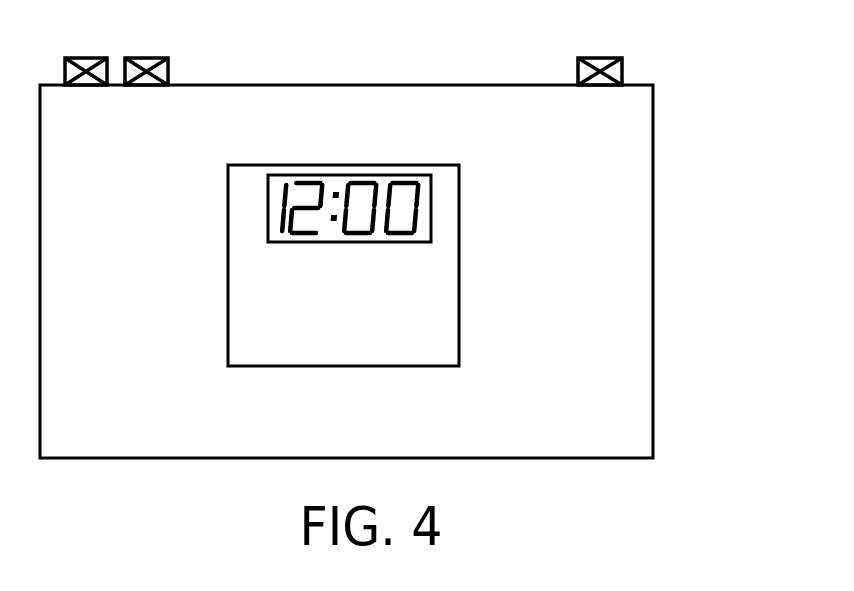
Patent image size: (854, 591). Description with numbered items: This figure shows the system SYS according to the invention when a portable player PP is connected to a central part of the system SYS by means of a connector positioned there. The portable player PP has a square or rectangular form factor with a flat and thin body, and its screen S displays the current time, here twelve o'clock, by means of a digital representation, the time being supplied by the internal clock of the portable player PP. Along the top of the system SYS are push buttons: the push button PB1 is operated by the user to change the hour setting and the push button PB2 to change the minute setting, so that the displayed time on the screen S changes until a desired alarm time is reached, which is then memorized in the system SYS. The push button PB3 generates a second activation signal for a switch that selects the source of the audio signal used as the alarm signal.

The system SYS is at (653, 269).
The portable player PP is at (459, 319).
The screen S is at (430, 212).
The push button PB1 is at (86, 58).
The push button PB2 is at (146, 58).
The push button PB3 is at (603, 58).